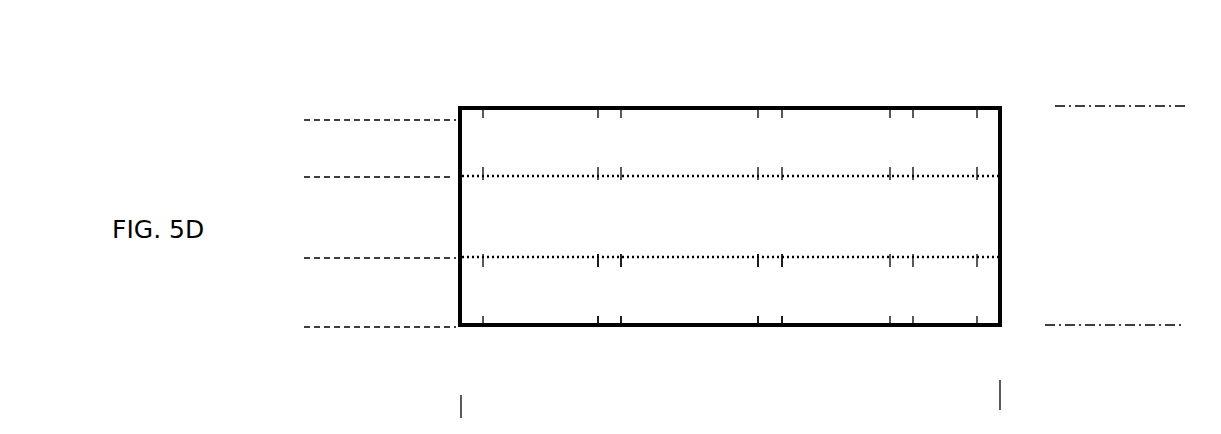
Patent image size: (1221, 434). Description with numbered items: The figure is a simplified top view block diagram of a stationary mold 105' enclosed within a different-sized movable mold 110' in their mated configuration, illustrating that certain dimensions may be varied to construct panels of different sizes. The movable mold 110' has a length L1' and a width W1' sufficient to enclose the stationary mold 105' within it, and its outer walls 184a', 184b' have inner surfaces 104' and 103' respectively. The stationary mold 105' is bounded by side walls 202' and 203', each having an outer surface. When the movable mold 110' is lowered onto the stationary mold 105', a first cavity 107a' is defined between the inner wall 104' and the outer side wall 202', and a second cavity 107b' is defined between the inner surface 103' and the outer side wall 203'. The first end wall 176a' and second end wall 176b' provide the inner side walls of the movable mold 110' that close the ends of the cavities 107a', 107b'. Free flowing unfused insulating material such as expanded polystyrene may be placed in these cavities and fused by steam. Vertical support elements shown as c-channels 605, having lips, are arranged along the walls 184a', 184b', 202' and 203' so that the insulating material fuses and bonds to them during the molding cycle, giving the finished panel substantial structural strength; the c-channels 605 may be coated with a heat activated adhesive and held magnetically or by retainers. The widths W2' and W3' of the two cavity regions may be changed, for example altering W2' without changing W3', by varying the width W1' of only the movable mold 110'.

The stationary mold 105' is at (730, 216).
The wall of movable mold 184b' is at (730, 85).
The movable mold 110' is at (730, 78).
The wall of movable mold 184a' is at (730, 354).
The first end wall 176a' is at (421, 216).
The second end wall 176b' is at (1044, 216).
The upper boundary line 203' is at (667, 125).
The lower boundary line 202' is at (679, 309).
The upper region 103' is at (791, 141).
The second cavity 107b' is at (725, 121).
The first cavity 107a' is at (730, 322).
The lower region 104' is at (786, 294).
The c-channels 605 is at (620, 265).
The width of movable mold W1' is at (1117, 215).
The cavity width W2' is at (347, 292).
The cavity width W3' is at (347, 148).
The length of movable mold L1' is at (730, 399).